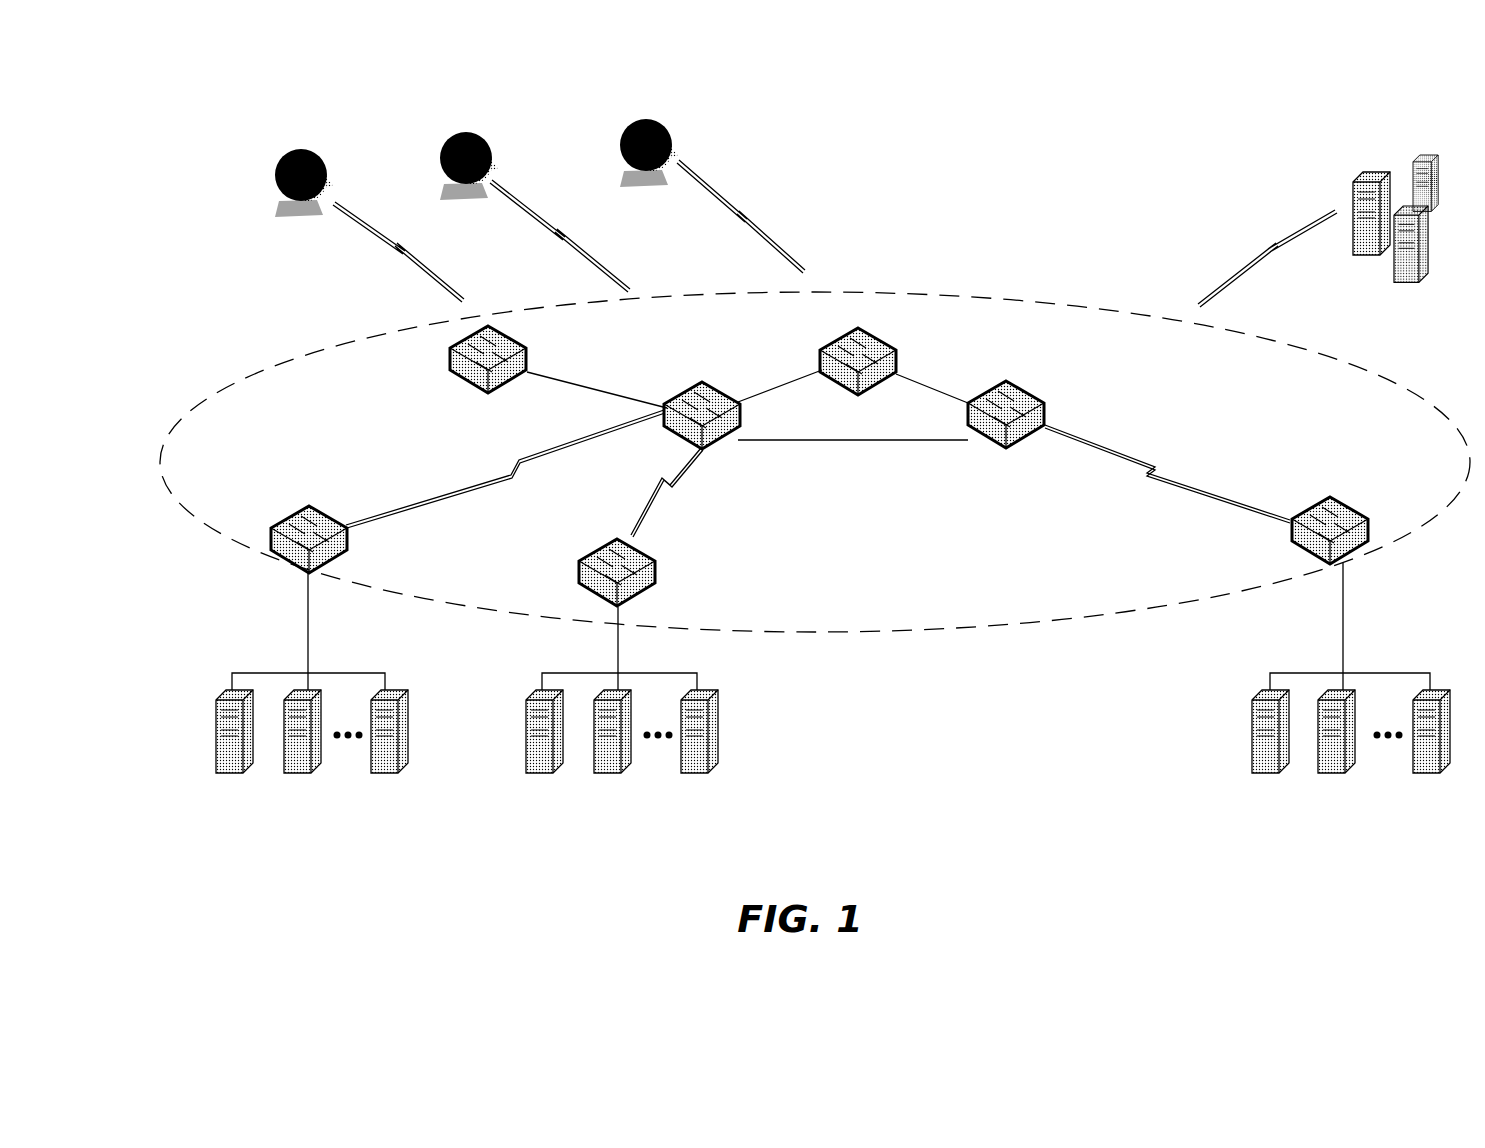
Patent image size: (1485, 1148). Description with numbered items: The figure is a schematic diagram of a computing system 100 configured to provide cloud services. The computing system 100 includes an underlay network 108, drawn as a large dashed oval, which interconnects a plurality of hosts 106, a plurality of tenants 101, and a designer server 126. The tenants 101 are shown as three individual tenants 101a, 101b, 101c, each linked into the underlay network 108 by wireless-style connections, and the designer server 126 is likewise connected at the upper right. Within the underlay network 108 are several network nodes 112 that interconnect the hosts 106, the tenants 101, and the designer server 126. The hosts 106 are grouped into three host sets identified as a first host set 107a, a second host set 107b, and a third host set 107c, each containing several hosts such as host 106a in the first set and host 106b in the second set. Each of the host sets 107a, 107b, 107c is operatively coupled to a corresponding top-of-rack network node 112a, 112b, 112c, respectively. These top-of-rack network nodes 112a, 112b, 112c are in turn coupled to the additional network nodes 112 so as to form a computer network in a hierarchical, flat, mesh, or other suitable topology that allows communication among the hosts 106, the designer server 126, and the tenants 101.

The computing system 100 is at (1040, 158).
The tenants 101 is at (270, 100).
The tenant 101a is at (258, 158).
The tenant 101b is at (428, 140).
The tenant 101c is at (608, 125).
The hosts 106 is at (180, 723).
The host 106a is at (220, 698).
The host 106b is at (722, 690).
The first host set 107a is at (253, 701).
The second host set 107b is at (612, 710).
The third host set 107c is at (1400, 632).
The underlay network 108 is at (815, 462).
The network nodes 112 is at (452, 351).
The top-of-rack network node 112a is at (290, 515).
The top-of-rack network node 112b is at (617, 540).
The top-of-rack network node 112c is at (1350, 508).
The designer server 126 is at (1387, 243).